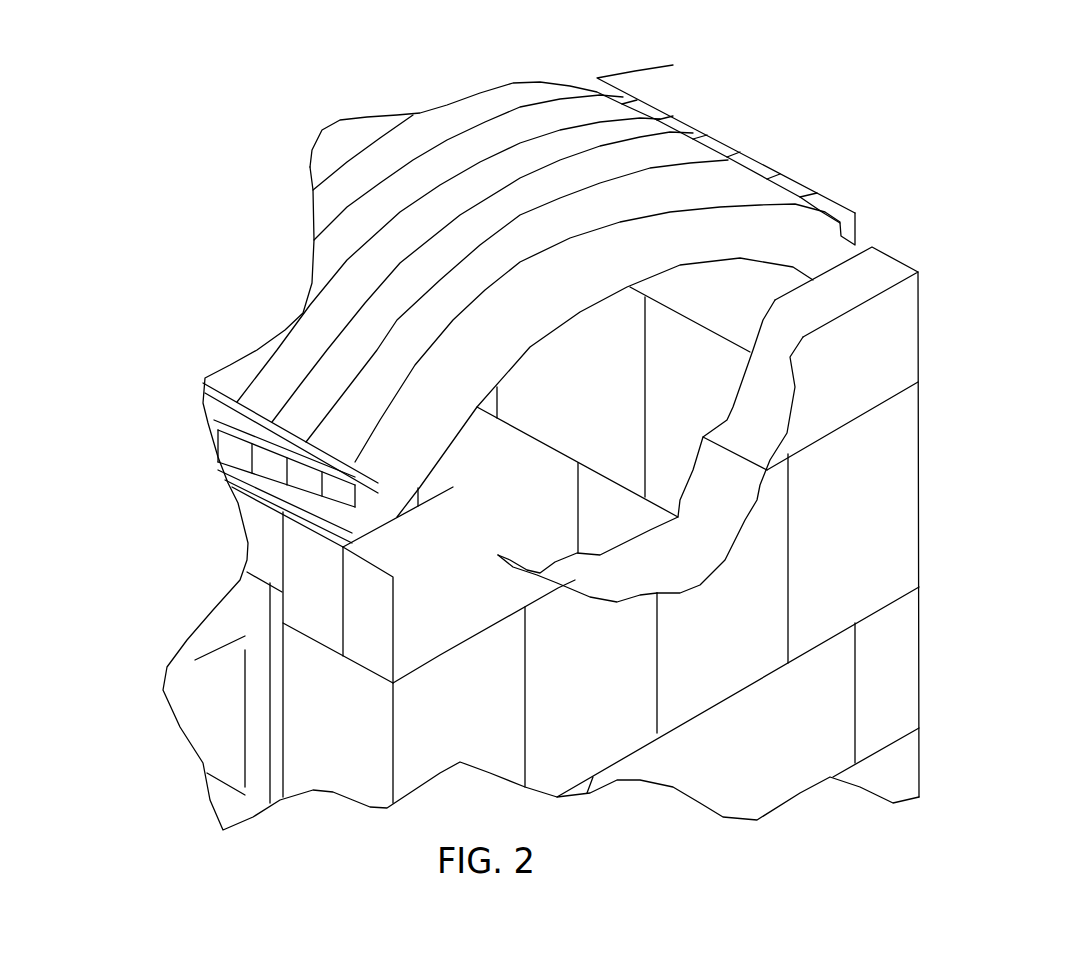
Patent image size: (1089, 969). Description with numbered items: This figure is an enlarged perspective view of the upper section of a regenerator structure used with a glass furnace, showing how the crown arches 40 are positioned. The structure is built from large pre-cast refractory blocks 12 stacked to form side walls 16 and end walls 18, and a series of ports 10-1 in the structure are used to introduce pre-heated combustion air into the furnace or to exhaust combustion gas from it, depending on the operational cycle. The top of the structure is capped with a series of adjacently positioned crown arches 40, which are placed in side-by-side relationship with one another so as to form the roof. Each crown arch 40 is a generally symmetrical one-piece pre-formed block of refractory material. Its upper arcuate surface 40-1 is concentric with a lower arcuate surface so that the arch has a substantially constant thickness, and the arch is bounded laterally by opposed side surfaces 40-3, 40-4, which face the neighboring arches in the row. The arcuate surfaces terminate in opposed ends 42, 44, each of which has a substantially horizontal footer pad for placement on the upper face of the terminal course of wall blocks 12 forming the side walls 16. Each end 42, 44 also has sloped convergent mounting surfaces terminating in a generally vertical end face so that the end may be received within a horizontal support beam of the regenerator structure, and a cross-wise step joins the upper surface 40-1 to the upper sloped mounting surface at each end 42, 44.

The ports 10-1 is at (205, 705).
The pre-cast refractory blocks 12 is at (880, 543).
The side walls 16 is at (696, 394).
The end walls 18 is at (722, 664).
The crown arches 40 is at (517, 350).
The upper arcuate surface 40-1 is at (652, 178).
The side surface 40-3 is at (572, 293).
The side surface 40-4 is at (372, 412).
The end 42 is at (825, 238).
The end 44 is at (372, 512).